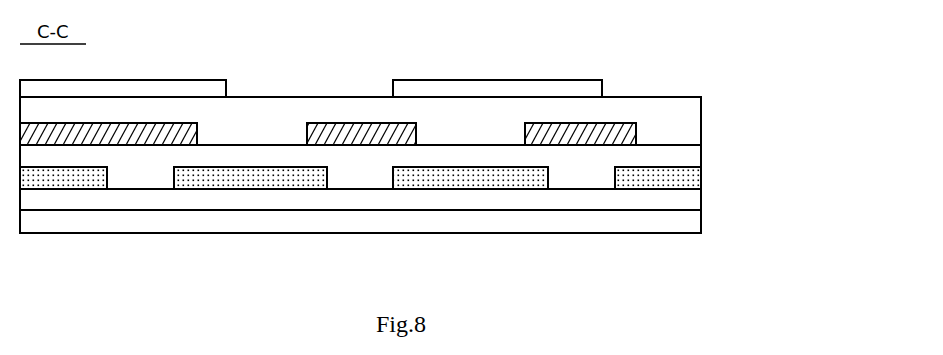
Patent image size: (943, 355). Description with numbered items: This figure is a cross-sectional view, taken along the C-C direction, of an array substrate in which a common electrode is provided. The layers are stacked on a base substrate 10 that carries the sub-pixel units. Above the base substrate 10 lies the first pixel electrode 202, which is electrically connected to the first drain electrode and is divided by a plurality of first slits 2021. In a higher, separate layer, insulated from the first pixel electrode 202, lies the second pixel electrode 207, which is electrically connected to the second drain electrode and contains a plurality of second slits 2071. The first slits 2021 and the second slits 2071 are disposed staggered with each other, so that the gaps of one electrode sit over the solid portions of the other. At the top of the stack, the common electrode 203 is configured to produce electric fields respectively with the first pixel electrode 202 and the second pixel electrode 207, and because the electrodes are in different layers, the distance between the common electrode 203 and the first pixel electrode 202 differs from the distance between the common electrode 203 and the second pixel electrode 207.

The base substrate 10 is at (678, 222).
The common electrode 203 is at (590, 88).
The second pixel electrode 207 is at (636, 132).
The second slit 2071 is at (630, 118).
The first pixel electrode 202 is at (683, 180).
The first slit 2021 is at (672, 219).